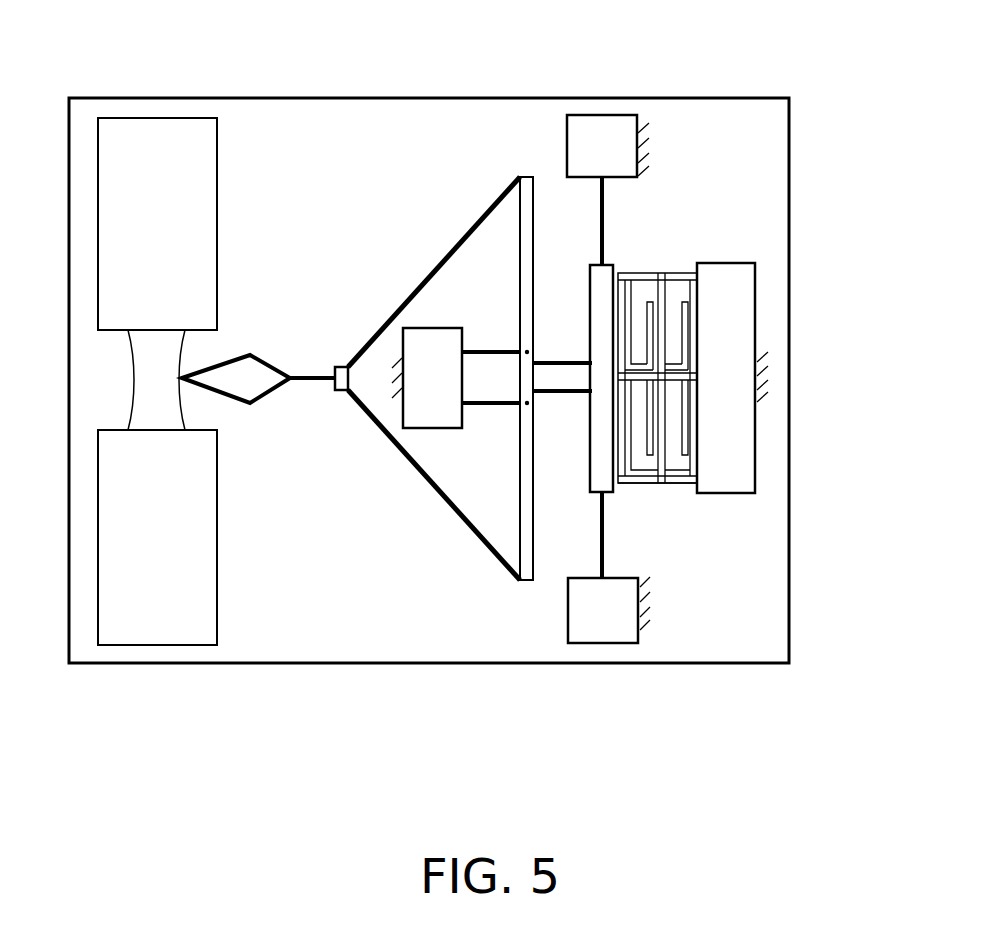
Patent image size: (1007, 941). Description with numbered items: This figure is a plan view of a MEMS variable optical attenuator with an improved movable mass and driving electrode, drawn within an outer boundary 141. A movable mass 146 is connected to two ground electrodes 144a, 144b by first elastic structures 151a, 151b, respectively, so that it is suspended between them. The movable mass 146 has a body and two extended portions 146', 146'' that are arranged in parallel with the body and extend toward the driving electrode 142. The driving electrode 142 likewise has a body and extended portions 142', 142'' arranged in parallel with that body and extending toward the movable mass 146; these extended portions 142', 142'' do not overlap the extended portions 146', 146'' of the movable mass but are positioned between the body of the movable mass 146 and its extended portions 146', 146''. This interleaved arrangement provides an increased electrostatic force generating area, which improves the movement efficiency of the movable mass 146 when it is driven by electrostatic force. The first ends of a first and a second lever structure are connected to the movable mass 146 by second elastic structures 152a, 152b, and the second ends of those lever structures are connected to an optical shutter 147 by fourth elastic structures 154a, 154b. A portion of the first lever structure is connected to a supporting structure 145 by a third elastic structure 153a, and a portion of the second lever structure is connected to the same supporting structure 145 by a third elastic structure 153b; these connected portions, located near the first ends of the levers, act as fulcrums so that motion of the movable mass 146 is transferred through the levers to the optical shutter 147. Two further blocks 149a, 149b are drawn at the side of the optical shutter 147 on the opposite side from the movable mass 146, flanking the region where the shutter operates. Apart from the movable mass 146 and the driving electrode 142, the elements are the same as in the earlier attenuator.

The housing frame 141 is at (790, 594).
The driving electrode 142 is at (797, 378).
The extended portion of the driving electrode 142' is at (746, 404).
The extended portion of the driving electrode 142'' is at (577, 404).
The ground electrode 144a is at (615, 125).
The ground electrode 144b is at (610, 647).
The supporting structure 145 is at (438, 328).
The movable mass 146 is at (697, 363).
The extended portion of the movable mass 146' is at (594, 290).
The extended portion of the movable mass 146'' is at (770, 280).
The optical shutter 147 is at (248, 357).
The upper actuator mass 149a is at (148, 135).
The lower actuator mass 149b is at (153, 632).
The first elastic structure 151a is at (603, 208).
The first elastic structure 151b is at (602, 540).
The second elastic structure 152a is at (560, 362).
The second elastic structure 152b is at (567, 397).
The third elastic structure 153a is at (487, 352).
The third elastic structure 153b is at (497, 403).
The fourth elastic structure 154a is at (408, 293).
The fourth elastic structure 154b is at (435, 493).